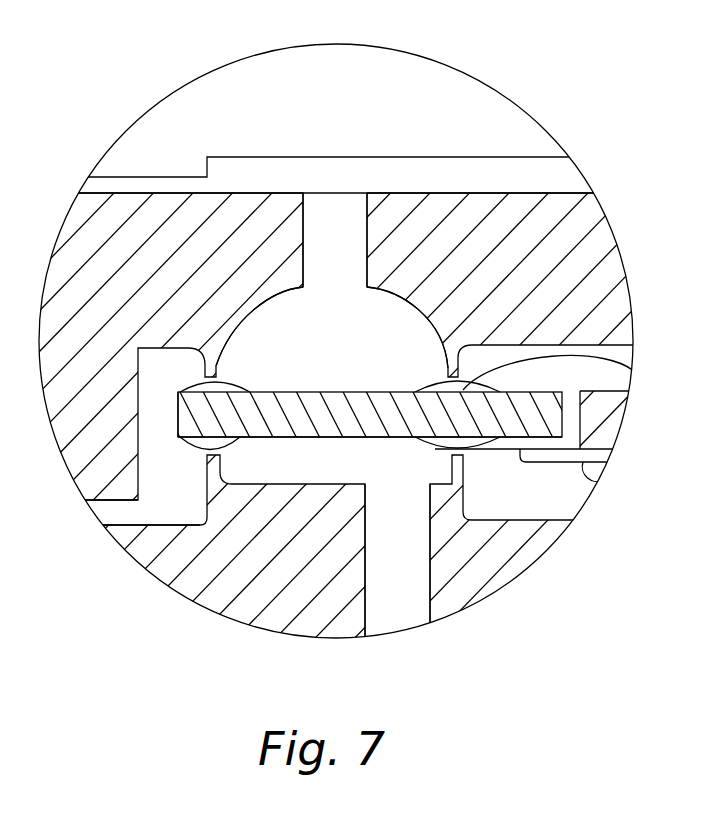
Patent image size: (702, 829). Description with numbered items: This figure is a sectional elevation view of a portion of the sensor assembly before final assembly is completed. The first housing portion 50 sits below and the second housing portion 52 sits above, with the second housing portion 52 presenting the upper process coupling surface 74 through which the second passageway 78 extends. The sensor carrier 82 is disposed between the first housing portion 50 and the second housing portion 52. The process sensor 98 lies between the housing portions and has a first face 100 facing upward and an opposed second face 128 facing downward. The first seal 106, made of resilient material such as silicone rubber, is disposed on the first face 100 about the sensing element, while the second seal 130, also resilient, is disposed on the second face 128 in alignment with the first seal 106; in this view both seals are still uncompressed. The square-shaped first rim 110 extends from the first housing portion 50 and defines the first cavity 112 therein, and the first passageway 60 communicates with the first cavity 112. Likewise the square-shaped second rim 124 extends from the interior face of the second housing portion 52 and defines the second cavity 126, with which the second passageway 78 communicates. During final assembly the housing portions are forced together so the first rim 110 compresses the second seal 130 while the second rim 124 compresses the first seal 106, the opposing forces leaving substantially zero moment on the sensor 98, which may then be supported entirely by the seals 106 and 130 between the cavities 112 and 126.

The first housing portion 50 is at (107, 530).
The second housing portion 52 is at (175, 172).
The first passageway 60 is at (380, 622).
The upper process coupling surface 74 is at (280, 157).
The second passageway 78 is at (348, 243).
The sensor carrier 82 is at (606, 481).
The process sensor 98 is at (168, 417).
The first face 100 is at (340, 389).
The first seal 106 is at (203, 386).
The first rim 110 is at (146, 561).
The first cavity 112 is at (267, 467).
The second rim 124 is at (211, 375).
The second cavity 126 is at (262, 330).
The second face 128 is at (272, 438).
The second seal 130 is at (190, 440).